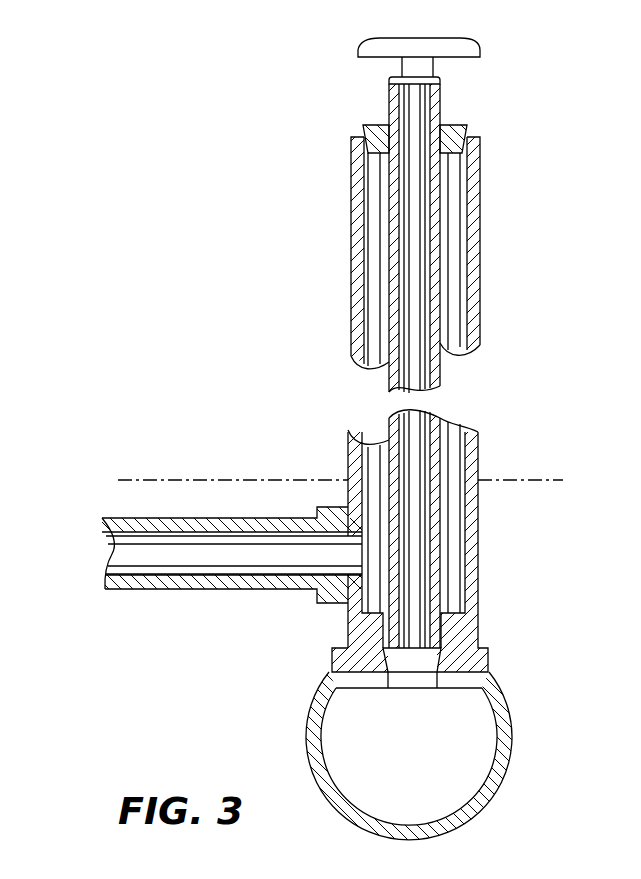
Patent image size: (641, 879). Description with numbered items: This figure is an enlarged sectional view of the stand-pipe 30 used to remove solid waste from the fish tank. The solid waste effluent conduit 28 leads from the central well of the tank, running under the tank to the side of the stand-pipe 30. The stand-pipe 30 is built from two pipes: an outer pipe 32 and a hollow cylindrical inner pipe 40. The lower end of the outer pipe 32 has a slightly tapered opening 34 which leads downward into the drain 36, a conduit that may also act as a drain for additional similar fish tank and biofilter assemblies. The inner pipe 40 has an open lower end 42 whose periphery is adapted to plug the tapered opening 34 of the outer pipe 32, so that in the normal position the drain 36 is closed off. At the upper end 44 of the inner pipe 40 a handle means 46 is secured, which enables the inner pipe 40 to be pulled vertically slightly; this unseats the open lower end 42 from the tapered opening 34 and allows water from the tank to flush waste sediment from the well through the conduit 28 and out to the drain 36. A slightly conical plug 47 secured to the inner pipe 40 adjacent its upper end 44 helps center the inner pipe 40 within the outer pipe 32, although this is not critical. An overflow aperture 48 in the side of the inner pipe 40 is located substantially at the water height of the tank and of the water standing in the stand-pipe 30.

The solid waste effluent conduit 28 is at (193, 586).
The stand-pipe 30 is at (332, 227).
The outer pipe 32 is at (480, 447).
The tapered opening 34 is at (420, 668).
The drain 36 is at (512, 720).
The inner pipe 40 is at (392, 312).
The open lower end 42 is at (416, 627).
The upper end 44 is at (447, 95).
The handle means 46 is at (374, 48).
The conical plug 47 is at (364, 126).
The overflow aperture 48 is at (446, 300).